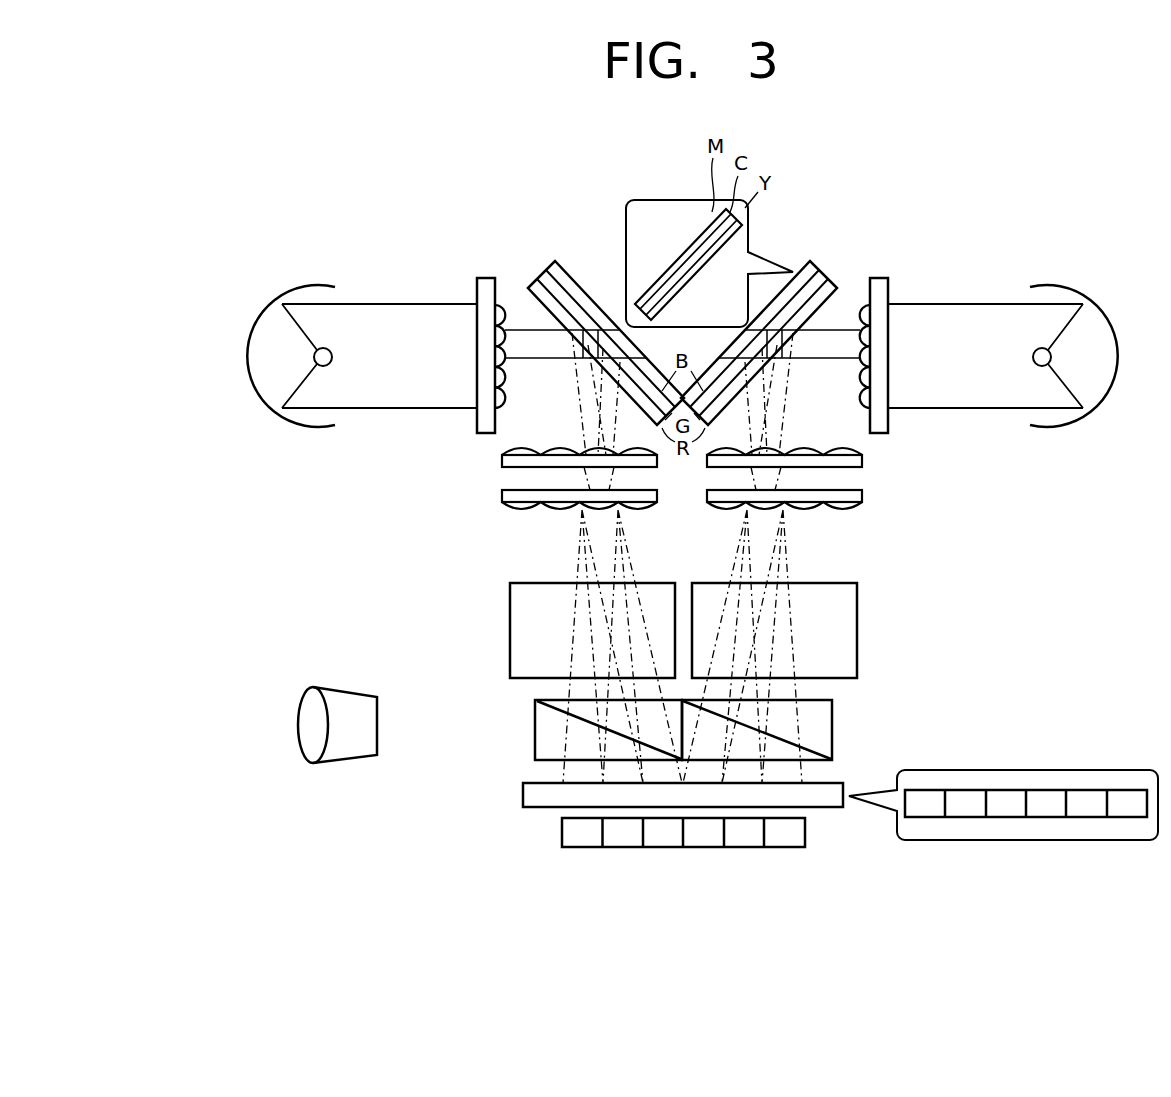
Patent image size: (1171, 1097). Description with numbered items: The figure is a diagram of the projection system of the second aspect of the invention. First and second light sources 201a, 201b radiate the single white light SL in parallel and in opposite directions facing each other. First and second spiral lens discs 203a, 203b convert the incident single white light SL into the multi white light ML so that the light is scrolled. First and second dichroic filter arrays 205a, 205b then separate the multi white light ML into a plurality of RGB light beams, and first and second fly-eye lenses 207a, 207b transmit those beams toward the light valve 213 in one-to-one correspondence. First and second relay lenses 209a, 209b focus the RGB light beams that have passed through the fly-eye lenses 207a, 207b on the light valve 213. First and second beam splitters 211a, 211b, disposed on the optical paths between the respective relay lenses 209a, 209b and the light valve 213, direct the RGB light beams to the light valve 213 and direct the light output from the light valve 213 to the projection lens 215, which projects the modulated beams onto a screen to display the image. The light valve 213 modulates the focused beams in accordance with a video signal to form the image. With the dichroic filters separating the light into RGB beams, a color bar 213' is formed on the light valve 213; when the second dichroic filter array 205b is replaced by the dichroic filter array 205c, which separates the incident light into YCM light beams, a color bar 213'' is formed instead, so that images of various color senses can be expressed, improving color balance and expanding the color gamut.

The first light source 201a is at (280, 305).
The second light source 201b is at (1098, 303).
The single white light SL is at (400, 303).
The multi white light ML is at (525, 330).
The first spiral lens disc 203a is at (480, 278).
The second spiral lens disc 203b is at (880, 278).
The first dichroic filter array 205a is at (567, 262).
The second dichroic filter array 205b is at (800, 262).
The dichroic filter array 205c is at (668, 268).
The first fly-eye lens 207a is at (500, 460).
The second fly-eye lens 207b is at (865, 460).
The first relay lens 209a is at (510, 632).
The second relay lens 209b is at (857, 632).
The first beam splitter 211a is at (535, 727).
The second beam splitter 211b is at (832, 727).
The light valve 213 is at (645, 795).
The color bar 213' is at (698, 865).
The color bar 213'' is at (1003, 831).
The projection lens 215 is at (342, 761).